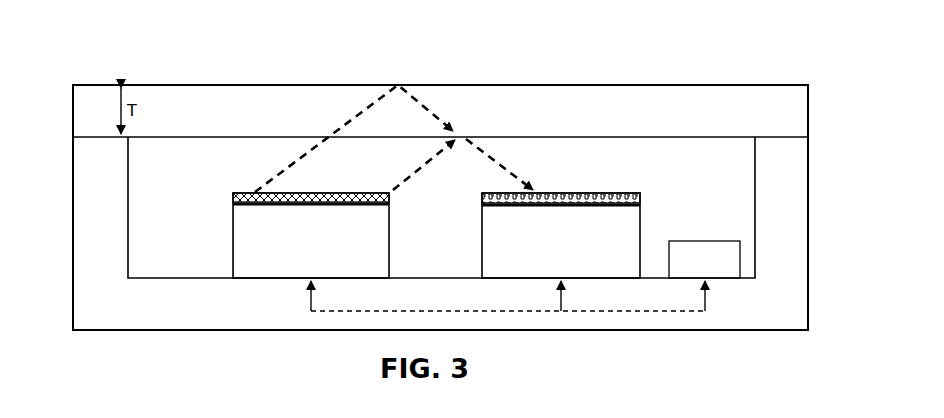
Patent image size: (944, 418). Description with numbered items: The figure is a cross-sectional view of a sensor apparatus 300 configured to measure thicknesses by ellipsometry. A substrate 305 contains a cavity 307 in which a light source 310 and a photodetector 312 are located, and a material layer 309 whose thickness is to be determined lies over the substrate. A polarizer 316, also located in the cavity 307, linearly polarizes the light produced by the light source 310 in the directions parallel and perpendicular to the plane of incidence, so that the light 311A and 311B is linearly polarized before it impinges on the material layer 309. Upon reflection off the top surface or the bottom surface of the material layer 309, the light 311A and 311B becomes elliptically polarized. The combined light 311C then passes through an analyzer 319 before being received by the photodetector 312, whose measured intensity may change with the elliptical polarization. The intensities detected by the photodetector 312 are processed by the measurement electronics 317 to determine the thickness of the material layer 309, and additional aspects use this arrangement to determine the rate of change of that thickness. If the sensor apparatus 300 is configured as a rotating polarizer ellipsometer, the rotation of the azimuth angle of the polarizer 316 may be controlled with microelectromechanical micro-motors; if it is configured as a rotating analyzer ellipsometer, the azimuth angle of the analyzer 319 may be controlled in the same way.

The sensor apparatus 300 is at (729, 19).
The substrate 305 is at (440, 315).
The cavity 307 is at (441, 207).
The material layer 309 is at (440, 122).
The light source 310 is at (311, 235).
The light 311A is at (355, 118).
The light 311B is at (415, 172).
The combined light 311C is at (495, 153).
The photodetector 312 is at (561, 235).
The polarizer 316 is at (244, 192).
The measurement electronics 317 is at (718, 279).
The analyzer 319 is at (612, 192).